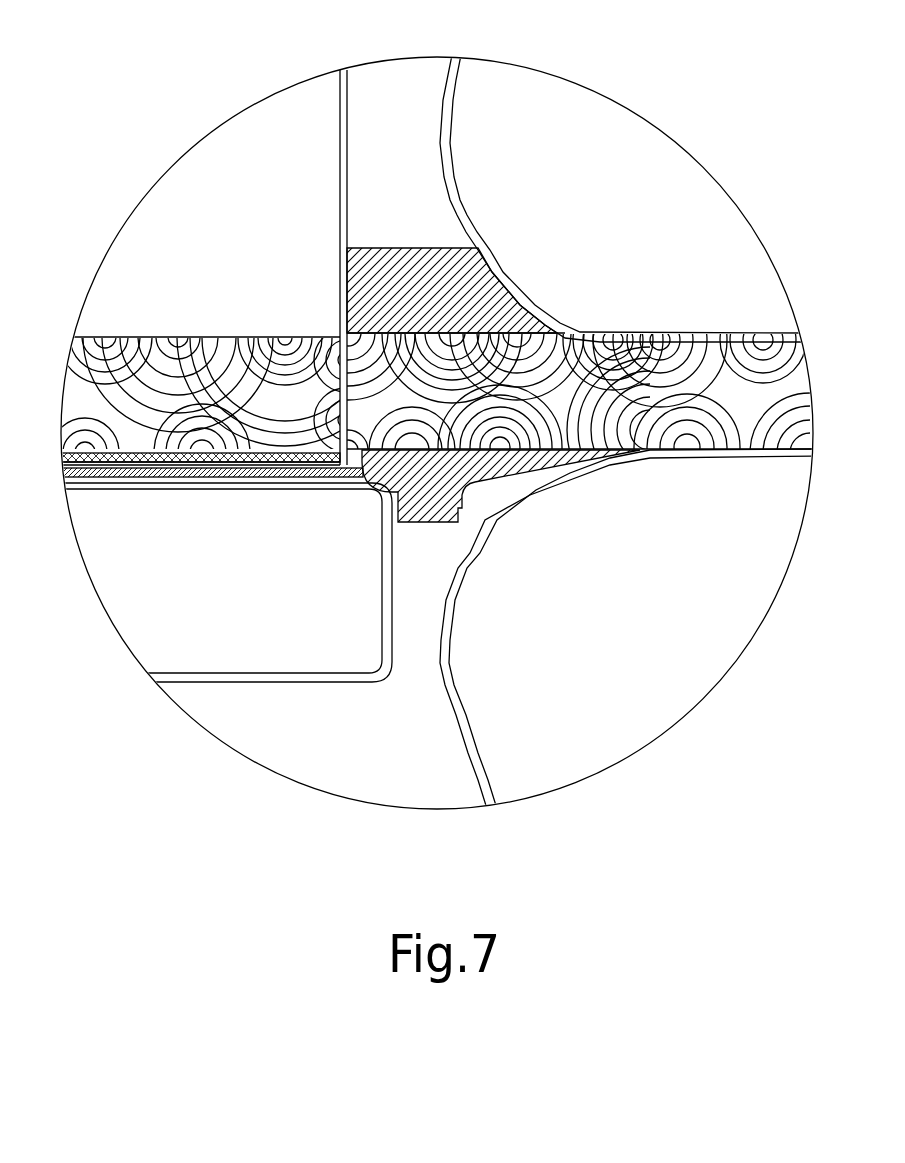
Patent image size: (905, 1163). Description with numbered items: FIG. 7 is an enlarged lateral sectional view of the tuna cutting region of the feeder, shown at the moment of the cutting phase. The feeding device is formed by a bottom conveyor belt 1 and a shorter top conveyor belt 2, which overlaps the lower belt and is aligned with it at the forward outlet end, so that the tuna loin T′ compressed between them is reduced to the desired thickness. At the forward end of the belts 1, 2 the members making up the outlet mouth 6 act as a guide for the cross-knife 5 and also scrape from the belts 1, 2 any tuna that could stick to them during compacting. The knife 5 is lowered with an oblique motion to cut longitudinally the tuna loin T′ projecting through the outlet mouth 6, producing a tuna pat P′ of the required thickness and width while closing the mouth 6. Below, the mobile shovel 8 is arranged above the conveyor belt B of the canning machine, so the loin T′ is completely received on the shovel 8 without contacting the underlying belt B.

The bottom conveyor belt 1 is at (490, 795).
The top conveyor belt 2 is at (457, 67).
The cross-knife 5 is at (345, 82).
The outlet mouth 6 is at (412, 262).
The mobile shovel 8 is at (66, 458).
The conveyor belt B is at (66, 484).
The tuna pat P′ is at (77, 385).
The tuna loin T′ is at (791, 343).